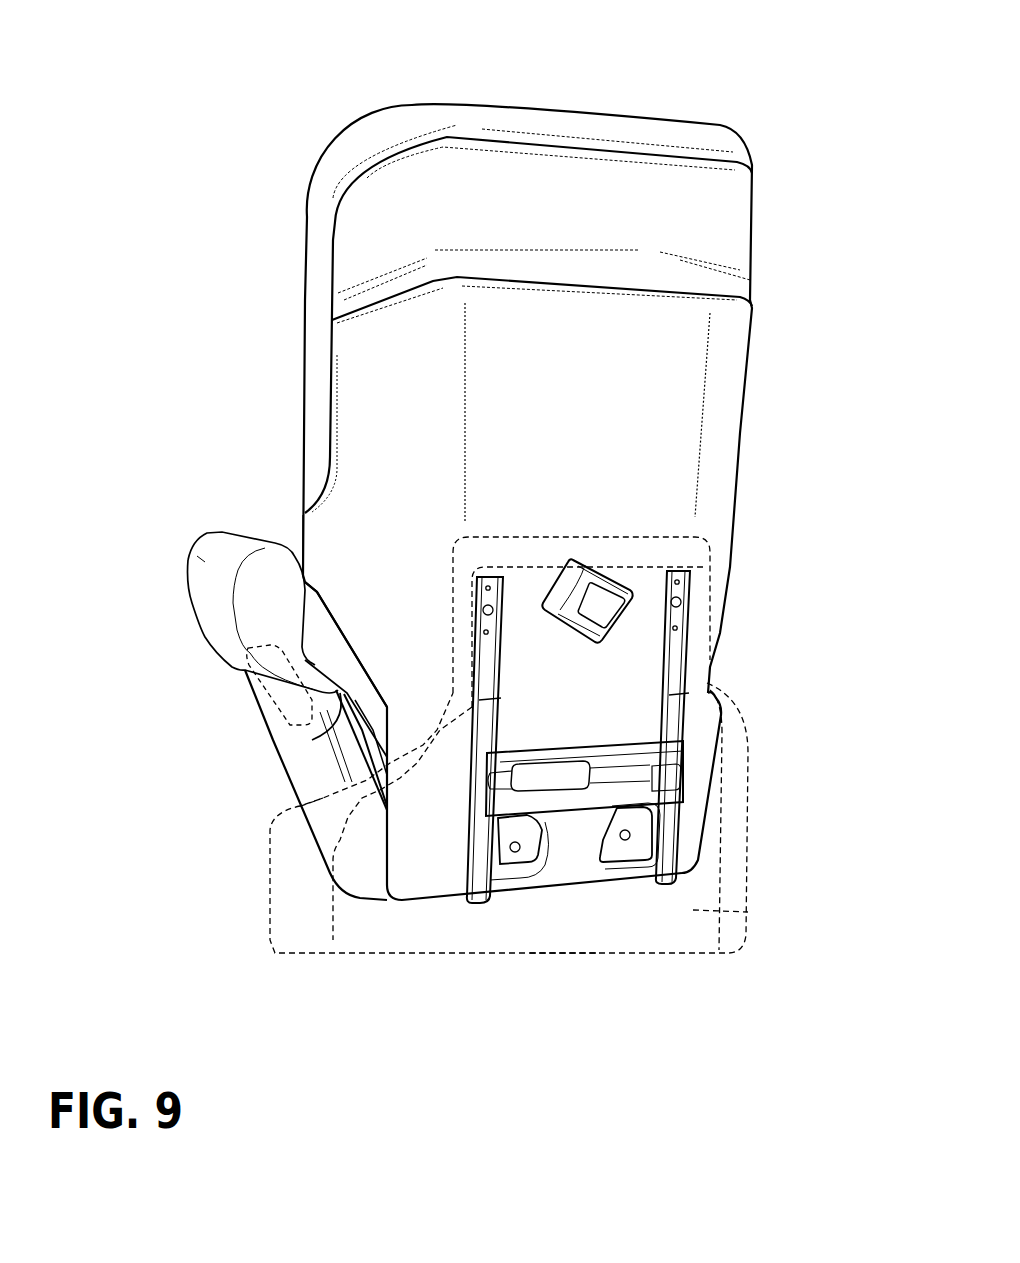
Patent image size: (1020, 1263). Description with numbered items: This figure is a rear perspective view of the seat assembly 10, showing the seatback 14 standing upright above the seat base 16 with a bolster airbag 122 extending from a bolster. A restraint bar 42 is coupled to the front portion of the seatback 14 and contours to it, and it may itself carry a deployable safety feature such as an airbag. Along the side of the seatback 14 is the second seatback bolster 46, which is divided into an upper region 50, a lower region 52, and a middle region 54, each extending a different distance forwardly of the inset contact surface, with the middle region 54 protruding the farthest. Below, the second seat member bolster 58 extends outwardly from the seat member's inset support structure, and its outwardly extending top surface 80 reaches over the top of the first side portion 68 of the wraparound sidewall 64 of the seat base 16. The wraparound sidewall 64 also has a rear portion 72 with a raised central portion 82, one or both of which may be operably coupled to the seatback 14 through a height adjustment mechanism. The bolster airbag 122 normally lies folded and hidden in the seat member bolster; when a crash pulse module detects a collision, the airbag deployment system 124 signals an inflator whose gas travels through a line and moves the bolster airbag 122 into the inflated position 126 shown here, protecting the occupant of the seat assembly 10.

The seat assembly 10 is at (612, 85).
The seatback 14 is at (630, 460).
The seat base 16 is at (735, 822).
The restraint bar 42 is at (417, 127).
The second seatback bolster 46 is at (328, 515).
The upper region 50 is at (358, 375).
The lower region 52 is at (402, 692).
The middle region 54 is at (345, 610).
The second seat member bolster 58 is at (289, 782).
The wraparound sidewall 64 is at (693, 910).
The first side portion 68 is at (303, 917).
The rear portion 72 is at (560, 910).
The top surface 80 is at (312, 740).
The raised central portion 82 is at (627, 635).
The bolster airbag 122 is at (225, 538).
The airbag deployment system 124 is at (257, 703).
The inflated position 126 is at (186, 562).